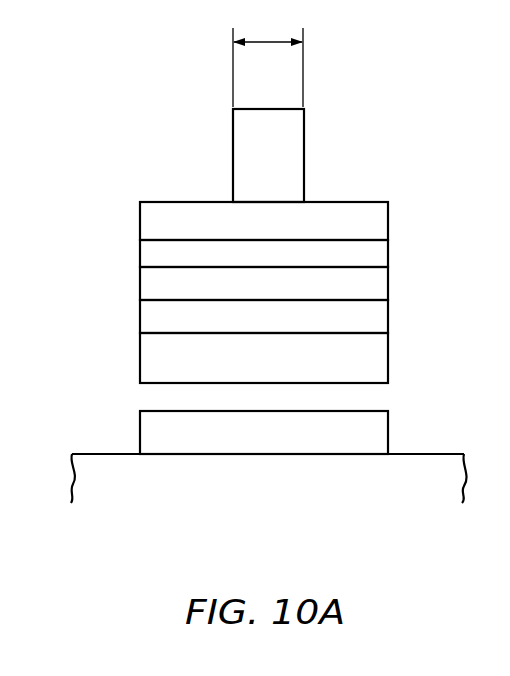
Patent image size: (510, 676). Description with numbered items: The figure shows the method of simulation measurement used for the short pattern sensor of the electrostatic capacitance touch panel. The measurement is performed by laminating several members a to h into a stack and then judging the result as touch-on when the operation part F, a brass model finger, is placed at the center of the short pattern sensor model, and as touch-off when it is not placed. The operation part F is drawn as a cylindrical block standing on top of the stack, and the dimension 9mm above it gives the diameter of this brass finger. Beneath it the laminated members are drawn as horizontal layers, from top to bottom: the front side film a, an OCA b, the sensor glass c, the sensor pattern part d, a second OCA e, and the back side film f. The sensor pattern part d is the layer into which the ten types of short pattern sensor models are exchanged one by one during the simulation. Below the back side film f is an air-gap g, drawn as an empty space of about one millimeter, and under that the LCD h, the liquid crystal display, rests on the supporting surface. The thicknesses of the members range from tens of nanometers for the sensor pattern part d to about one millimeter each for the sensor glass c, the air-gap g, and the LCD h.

The 9 mm diameter dimension of load F 9mm is at (281, 55).
The operation part F is at (293, 140).
The front side film a is at (118, 220).
The OCA b is at (118, 253).
The sensor glass c is at (118, 283).
The sensor pattern part d is at (118, 320).
The OCA e is at (118, 343).
The back side film f is at (118, 375).
The air-gap g is at (120, 400).
The LCD h is at (118, 433).